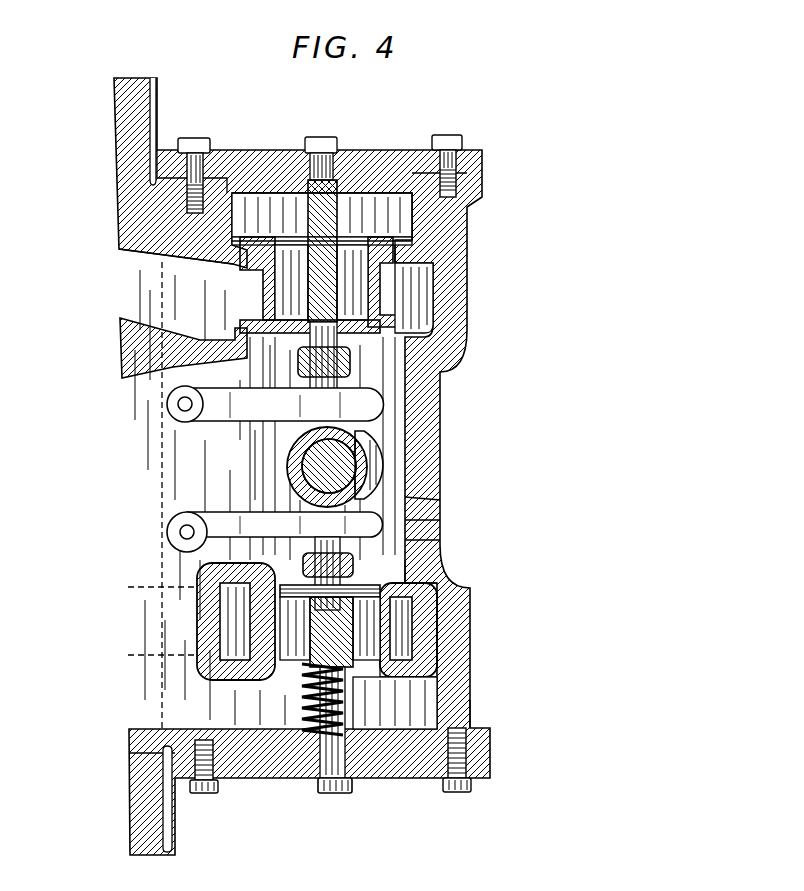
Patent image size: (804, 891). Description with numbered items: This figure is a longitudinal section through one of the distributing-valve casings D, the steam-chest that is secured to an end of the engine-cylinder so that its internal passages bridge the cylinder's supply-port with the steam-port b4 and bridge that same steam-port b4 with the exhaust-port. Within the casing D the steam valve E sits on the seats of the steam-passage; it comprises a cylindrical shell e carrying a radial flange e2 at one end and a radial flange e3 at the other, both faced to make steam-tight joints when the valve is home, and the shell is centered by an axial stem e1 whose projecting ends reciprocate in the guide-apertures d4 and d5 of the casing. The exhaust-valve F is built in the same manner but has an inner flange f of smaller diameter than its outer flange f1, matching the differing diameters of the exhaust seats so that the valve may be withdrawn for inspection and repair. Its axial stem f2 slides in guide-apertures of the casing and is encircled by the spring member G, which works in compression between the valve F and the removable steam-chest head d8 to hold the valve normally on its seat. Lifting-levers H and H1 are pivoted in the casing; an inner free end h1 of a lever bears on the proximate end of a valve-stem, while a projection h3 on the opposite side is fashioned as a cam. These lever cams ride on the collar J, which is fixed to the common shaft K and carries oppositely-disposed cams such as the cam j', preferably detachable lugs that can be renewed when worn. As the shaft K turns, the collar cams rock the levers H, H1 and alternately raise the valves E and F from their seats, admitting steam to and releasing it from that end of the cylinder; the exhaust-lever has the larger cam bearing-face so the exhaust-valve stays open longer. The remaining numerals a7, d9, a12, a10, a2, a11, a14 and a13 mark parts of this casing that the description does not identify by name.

The steam-port b4 is at (132, 460).
The valve E is at (282, 287).
The upper casing wall a7 is at (137, 262).
The steam-chest head d8 is at (425, 235).
The cylindrical shell e is at (470, 232).
The radial flange e2 is at (420, 210).
The axial stem e1 is at (378, 165).
The radial flange e3 is at (410, 318).
The valve stem guide d9 is at (405, 337).
The guide-aperture d4 is at (330, 160).
The guide-aperture d5 is at (335, 370).
The lifting-lever H is at (205, 414).
The lifting-lever H1 is at (290, 527).
The common shaft K is at (380, 470).
The collar J is at (300, 452).
The cam j' is at (424, 460).
The inner free end h1 is at (440, 500).
The projection h3 is at (440, 520).
The axial stem f2 is at (440, 540).
The stem nut a12 is at (410, 563).
The casing shoulder a10 is at (410, 600).
The valve cage a2 is at (247, 632).
The second valve F is at (397, 637).
The inner flange f is at (395, 608).
The casing ledge a11 is at (423, 667).
The outer flange f1 is at (407, 687).
The stem opening a14 is at (305, 770).
The stem nut a13 is at (350, 778).
The spring member G is at (305, 725).
The valve-casing D is at (445, 705).